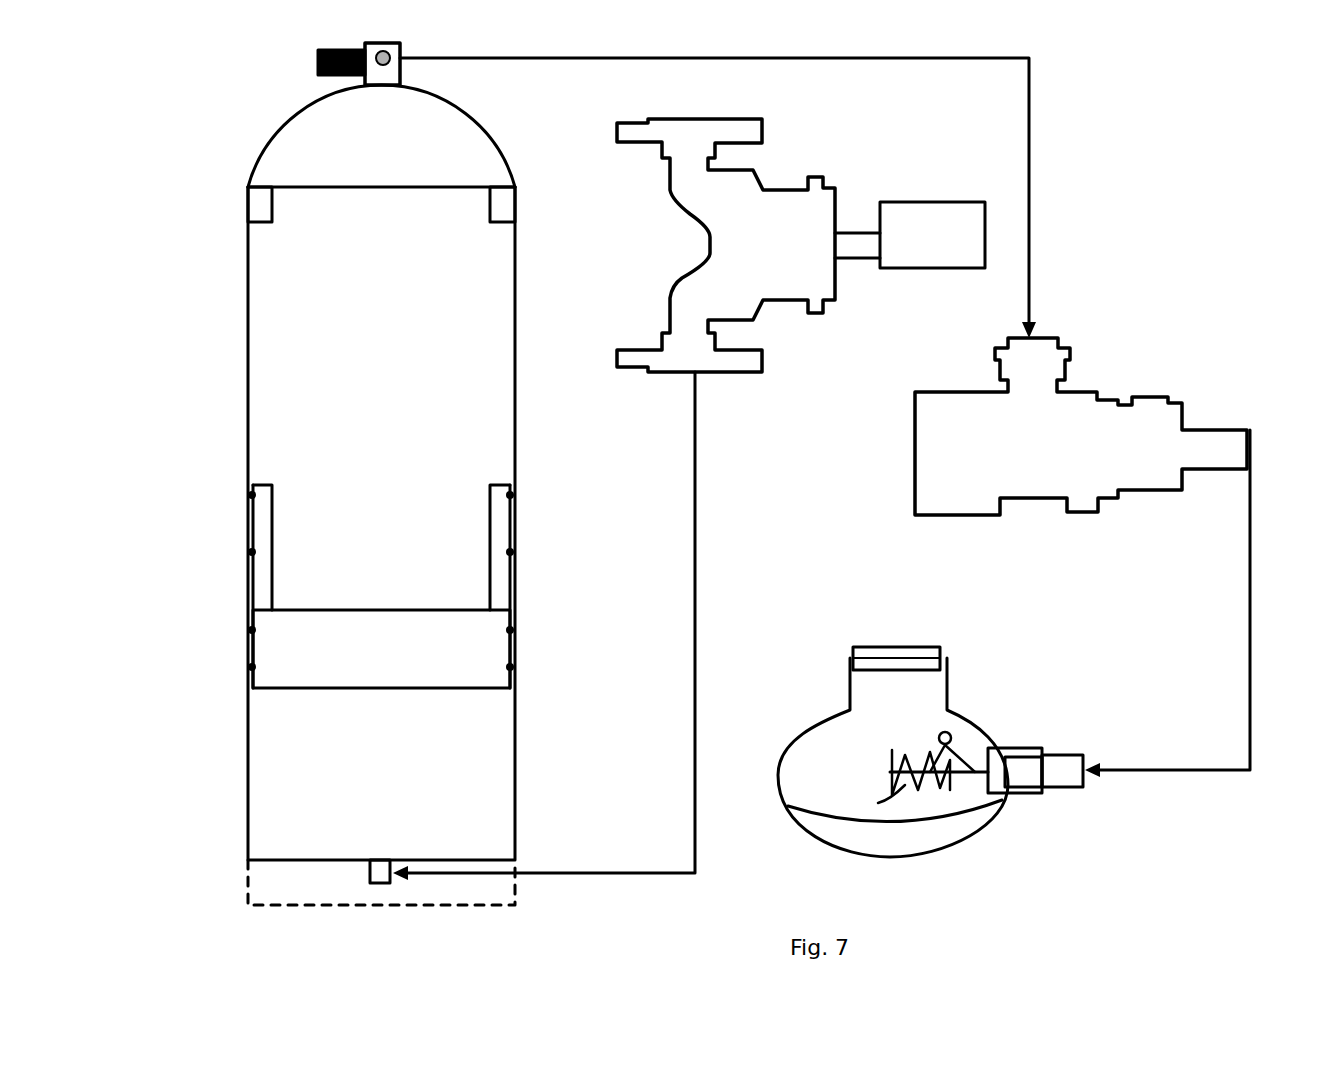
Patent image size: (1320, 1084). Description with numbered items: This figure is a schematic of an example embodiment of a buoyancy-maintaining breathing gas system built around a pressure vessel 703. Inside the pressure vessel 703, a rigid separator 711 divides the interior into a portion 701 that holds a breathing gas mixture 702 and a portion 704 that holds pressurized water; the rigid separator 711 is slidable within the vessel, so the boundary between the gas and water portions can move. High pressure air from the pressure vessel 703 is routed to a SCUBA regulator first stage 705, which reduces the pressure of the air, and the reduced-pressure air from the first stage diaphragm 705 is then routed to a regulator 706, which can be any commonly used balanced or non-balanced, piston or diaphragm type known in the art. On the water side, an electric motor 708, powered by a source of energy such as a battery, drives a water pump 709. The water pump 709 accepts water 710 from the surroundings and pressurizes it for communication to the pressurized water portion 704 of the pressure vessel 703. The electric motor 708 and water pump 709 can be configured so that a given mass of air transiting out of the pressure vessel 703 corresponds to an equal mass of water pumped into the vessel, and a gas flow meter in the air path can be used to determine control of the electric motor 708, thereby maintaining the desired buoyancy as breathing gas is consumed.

The portion for breathing gas mixture 701 is at (247, 252).
The breathing gas mixture 702 is at (403, 364).
The pressure vessel 703 is at (250, 135).
The portion for pressurized water 704 is at (406, 781).
The SCUBA regulator first stage 705 is at (1112, 362).
The regulator 706 is at (1076, 702).
The electric motor 708 is at (953, 241).
The water pump 709 is at (842, 164).
The water 710 is at (711, 112).
The rigid separator 711 is at (396, 658).